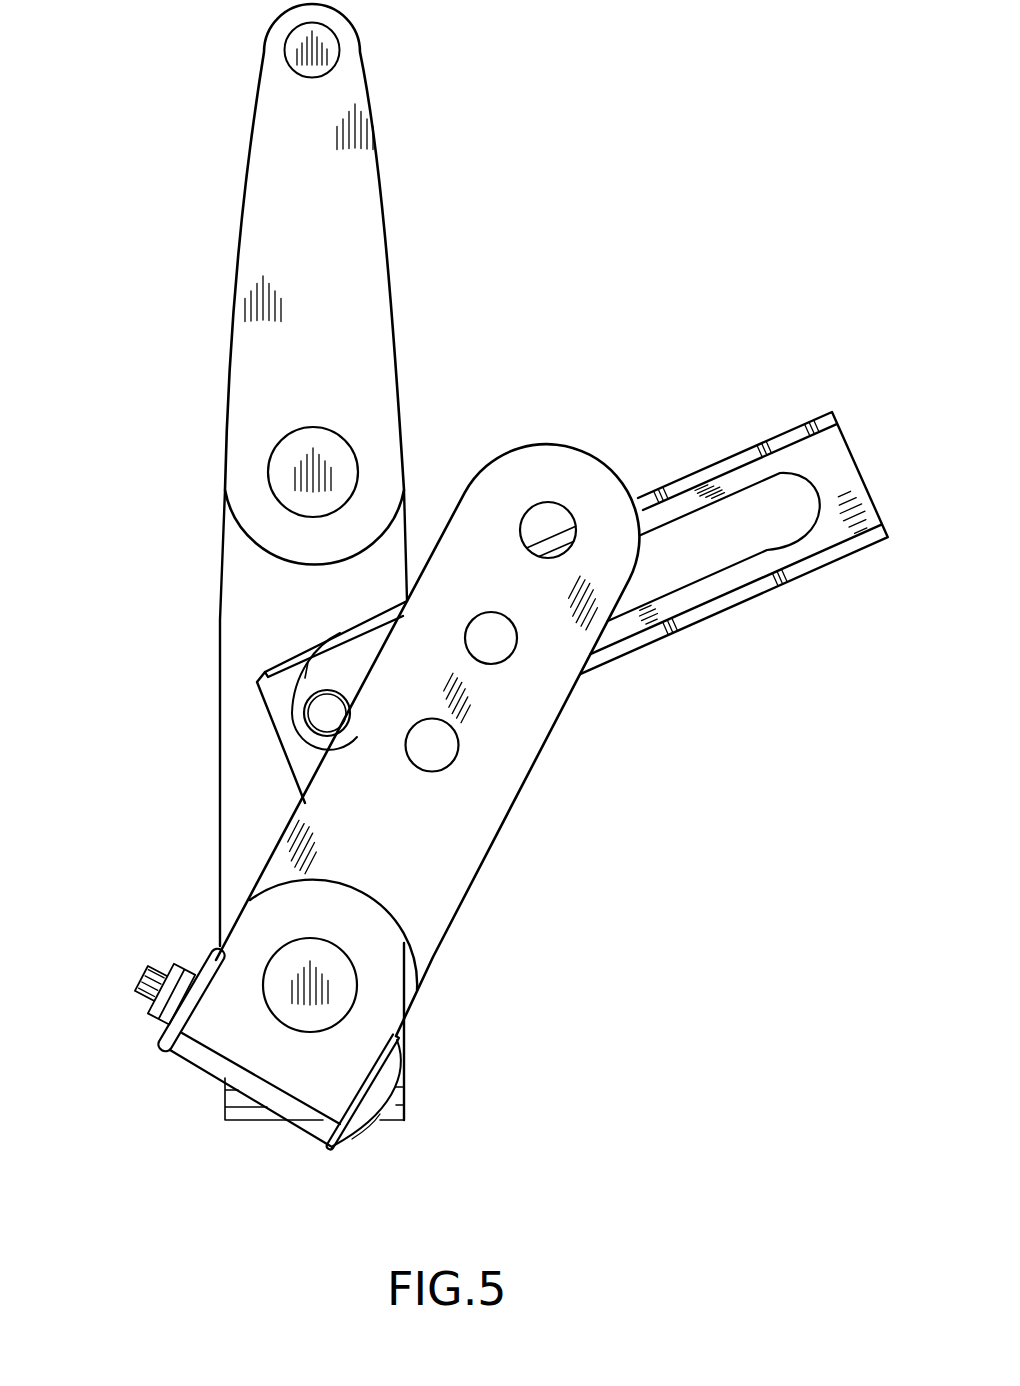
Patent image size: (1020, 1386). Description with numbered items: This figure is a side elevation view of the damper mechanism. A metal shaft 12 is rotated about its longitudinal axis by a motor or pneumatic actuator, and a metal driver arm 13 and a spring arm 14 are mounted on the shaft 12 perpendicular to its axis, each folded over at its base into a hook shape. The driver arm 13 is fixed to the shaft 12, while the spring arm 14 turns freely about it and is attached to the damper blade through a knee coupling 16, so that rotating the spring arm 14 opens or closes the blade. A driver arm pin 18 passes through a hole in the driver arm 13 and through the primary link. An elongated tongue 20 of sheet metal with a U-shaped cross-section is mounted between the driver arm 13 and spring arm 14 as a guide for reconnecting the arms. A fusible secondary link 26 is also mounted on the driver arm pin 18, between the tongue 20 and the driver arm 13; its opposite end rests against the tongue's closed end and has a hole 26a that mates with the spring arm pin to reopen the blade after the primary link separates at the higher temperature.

The shaft 12 is at (340, 988).
The driver arm 13 is at (445, 828).
The spring arm 14 is at (230, 388).
The knee coupling 16 is at (392, 243).
The driver arm pin 18 is at (510, 657).
The tongue 20 is at (825, 565).
The secondary link 26 is at (368, 660).
The hole 26a is at (327, 718).